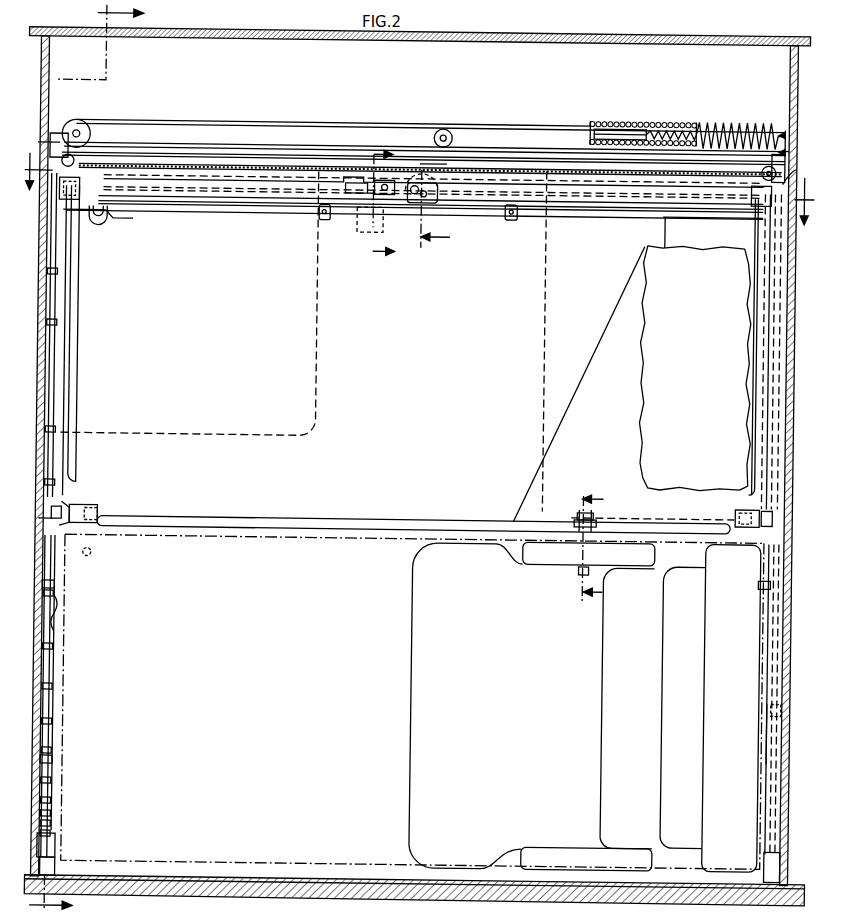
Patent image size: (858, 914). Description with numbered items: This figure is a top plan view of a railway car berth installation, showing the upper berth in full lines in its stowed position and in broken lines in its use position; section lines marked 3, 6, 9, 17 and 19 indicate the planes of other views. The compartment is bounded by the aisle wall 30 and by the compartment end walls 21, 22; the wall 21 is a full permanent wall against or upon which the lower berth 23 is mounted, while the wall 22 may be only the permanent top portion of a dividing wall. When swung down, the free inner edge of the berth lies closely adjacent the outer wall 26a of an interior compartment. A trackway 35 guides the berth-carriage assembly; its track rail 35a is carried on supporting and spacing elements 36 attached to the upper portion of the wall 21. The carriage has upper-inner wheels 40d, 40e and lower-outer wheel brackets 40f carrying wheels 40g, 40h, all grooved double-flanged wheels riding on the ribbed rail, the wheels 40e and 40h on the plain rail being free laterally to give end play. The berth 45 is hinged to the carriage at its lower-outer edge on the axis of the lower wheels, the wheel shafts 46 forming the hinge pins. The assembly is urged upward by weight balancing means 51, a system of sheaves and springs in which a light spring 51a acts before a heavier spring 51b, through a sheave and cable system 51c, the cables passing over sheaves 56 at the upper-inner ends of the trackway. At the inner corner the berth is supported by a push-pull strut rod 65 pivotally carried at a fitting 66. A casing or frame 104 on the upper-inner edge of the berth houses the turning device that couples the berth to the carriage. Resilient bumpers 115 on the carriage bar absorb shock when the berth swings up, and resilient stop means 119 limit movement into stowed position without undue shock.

The aisle wall 30 is at (513, 43).
The compartment end wall 21 is at (790, 760).
The compartment end wall 22 is at (44, 771).
The lower berth 23 is at (742, 711).
The outer wall of interior compartment 26a is at (651, 521).
The trackway 35 is at (58, 677).
The track rail 35a is at (66, 589).
The supporting and spacing elements 36 is at (53, 645).
The wheel 40d is at (39, 140).
The wheel 40e is at (804, 172).
The lower-outer wheel bracket 40f is at (63, 542).
The wheel 40g is at (31, 521).
The wheel 40h is at (771, 536).
The berth 45 is at (319, 531).
The wheel shaft 46 is at (91, 519).
The weight balancing means 51 is at (446, 129).
The light spring 51a is at (664, 115).
The heavier spring 51b is at (727, 122).
The sheave and cable system 51c is at (426, 134).
The sheave 56 is at (70, 164).
The push-pull strut rod 65 is at (93, 560).
The fitting 66 is at (90, 227).
The casing or frame 104 is at (458, 170).
The resilient bumper 115 is at (328, 216).
The resilient stop means or bumper 119 is at (146, 214).
The section line 3- 3 is at (90, 458).
The section line 6- 6 is at (419, 199).
The section line 9- 9 is at (441, 203).
The section line 17- 17 is at (392, 210).
The section line 19-19 / bolt 19 is at (599, 555).